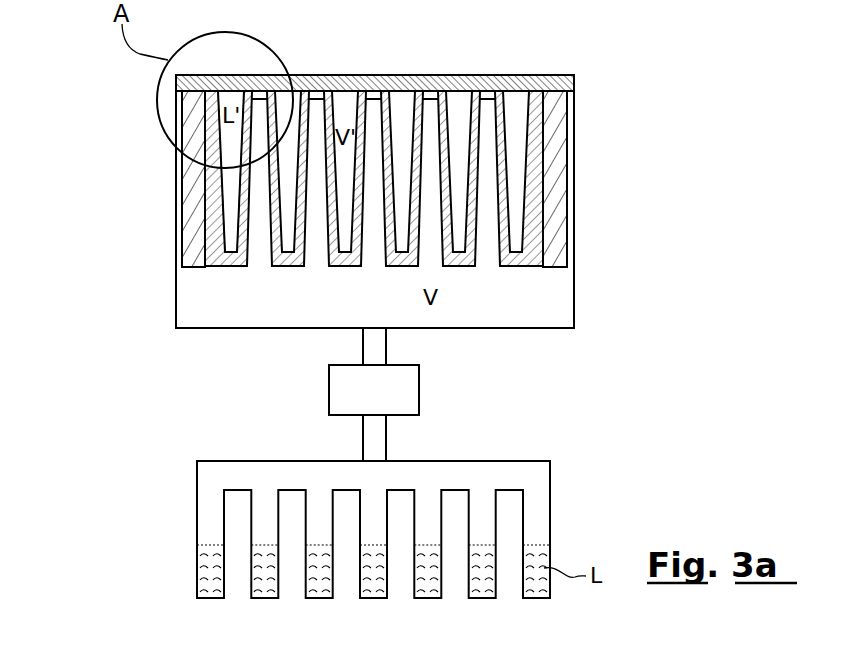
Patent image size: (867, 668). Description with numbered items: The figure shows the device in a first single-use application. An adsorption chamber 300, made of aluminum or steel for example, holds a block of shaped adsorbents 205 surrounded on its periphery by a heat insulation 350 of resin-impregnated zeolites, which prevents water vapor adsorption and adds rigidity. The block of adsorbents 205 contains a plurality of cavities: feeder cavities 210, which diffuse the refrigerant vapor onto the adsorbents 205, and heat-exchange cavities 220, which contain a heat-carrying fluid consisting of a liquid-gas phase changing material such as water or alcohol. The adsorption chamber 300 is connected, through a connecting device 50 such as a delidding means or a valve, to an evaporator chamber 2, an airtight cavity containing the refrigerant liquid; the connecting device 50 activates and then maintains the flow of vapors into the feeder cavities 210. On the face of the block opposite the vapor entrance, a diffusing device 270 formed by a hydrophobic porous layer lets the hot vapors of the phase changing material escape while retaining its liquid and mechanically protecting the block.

The evaporator chamber 2 is at (550, 492).
The connecting device 50 is at (420, 387).
The adsorbents 205 is at (503, 168).
The feeder cavities 210 is at (258, 262).
The heat-exchange cavities 220 is at (240, 130).
The diffusing device 270 is at (533, 78).
The adsorption chamber 300 is at (575, 287).
The heat insulation 350 is at (560, 226).